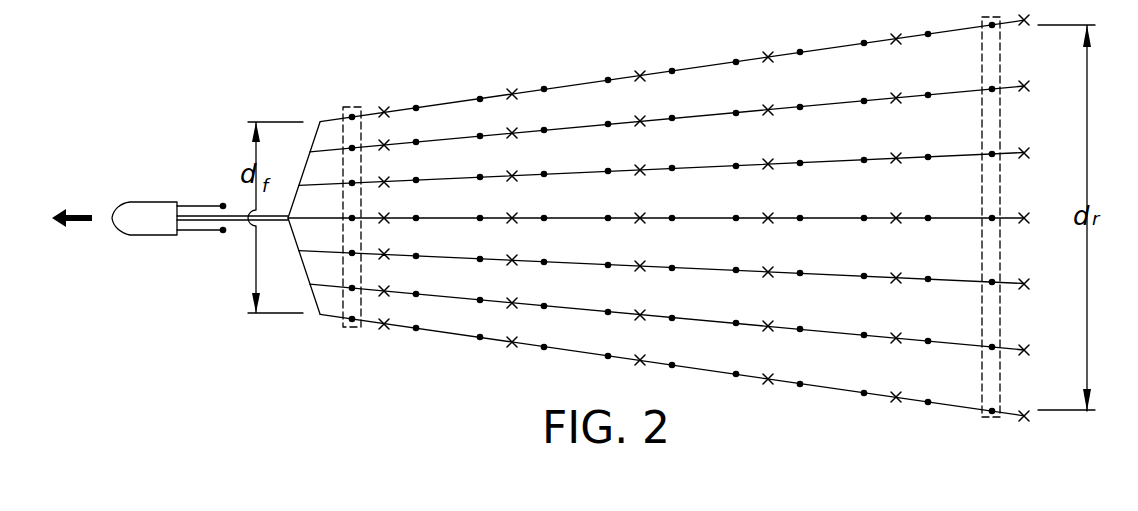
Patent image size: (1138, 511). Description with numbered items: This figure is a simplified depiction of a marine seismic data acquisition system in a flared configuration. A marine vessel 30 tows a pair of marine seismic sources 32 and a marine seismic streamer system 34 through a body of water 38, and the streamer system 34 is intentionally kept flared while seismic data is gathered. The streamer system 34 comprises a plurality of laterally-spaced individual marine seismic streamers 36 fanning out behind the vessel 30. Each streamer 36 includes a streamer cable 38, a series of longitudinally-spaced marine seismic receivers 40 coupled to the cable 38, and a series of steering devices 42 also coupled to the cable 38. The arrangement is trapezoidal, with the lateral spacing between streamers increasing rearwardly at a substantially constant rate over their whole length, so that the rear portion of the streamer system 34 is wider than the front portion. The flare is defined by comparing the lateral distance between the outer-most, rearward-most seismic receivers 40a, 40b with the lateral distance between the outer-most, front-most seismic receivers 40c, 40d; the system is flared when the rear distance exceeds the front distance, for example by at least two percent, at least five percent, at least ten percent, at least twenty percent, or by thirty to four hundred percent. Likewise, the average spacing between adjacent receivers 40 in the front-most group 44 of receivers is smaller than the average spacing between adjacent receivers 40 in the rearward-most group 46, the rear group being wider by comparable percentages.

The marine vessel 30 is at (140, 202).
The marine seismic sources 32 is at (222, 204).
The marine seismic streamer system 34 is at (450, 57).
The marine seismic streamers 36 is at (311, 173).
The streamer cable 38 is at (466, 178).
The marine seismic receivers 40 is at (544, 174).
The outer-most, rearward-most seismic receiver 40a is at (992, 22).
The outer-most, rearward-most seismic receiver 40b is at (992, 414).
The outer-most, front-most seismic receiver 40c is at (353, 107).
The outer-most, front-most seismic receiver 40d is at (352, 322).
The steering devices 42 is at (640, 170).
The front-most group of seismic receivers 44 is at (342, 313).
The rearward-most group of seismic receivers 46 is at (982, 393).